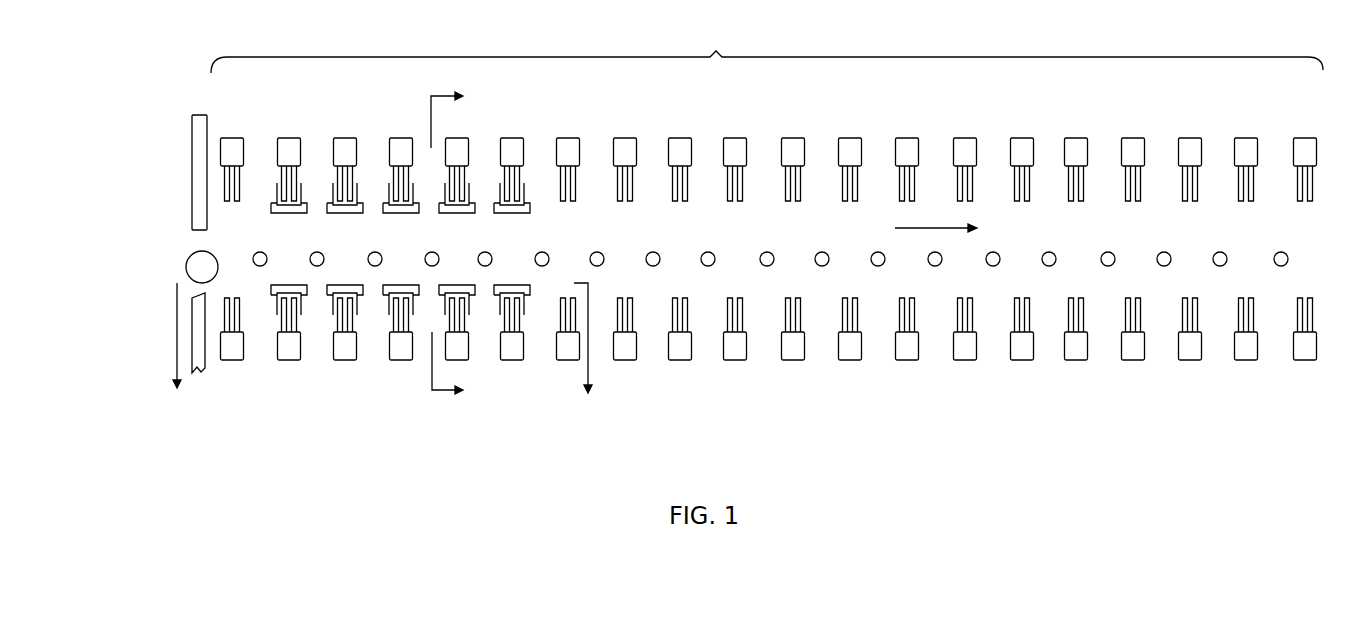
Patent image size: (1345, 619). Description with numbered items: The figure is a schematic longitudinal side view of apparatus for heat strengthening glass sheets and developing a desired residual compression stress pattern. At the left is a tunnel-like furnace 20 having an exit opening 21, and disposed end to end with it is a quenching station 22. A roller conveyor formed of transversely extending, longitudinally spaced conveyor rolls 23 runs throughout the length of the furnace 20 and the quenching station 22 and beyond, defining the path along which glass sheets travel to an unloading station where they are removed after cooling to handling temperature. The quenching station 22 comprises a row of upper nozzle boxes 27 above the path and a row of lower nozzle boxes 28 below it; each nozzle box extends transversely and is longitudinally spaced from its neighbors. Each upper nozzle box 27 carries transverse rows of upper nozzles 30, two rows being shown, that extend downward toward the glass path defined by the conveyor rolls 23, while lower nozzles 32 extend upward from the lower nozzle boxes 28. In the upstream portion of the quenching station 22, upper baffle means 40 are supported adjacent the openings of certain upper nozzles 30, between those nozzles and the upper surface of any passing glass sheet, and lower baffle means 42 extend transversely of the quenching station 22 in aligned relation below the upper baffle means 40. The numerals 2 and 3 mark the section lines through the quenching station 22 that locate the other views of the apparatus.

The tunnel-like furnace 20 is at (197, 303).
The exit opening 21 is at (198, 244).
The quenching station 22 is at (767, 49).
The conveyor rolls 23 is at (263, 252).
The upper nozzle boxes 27 is at (570, 143).
The lower nozzle boxes 28 is at (625, 352).
The upper nozzles 30 is at (568, 200).
The lower nozzles 32 is at (743, 298).
The upper baffle means 40 is at (360, 219).
The lower baffle means 42 is at (428, 279).
The section line 2- 2 is at (382, 352).
The section line 3- 3 is at (456, 243).